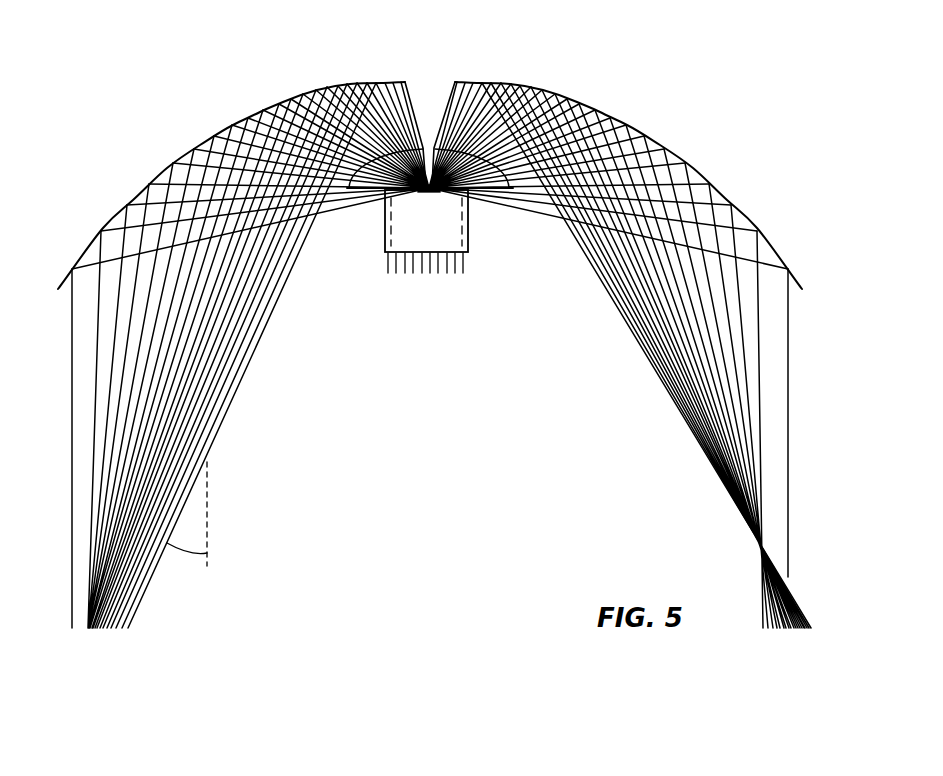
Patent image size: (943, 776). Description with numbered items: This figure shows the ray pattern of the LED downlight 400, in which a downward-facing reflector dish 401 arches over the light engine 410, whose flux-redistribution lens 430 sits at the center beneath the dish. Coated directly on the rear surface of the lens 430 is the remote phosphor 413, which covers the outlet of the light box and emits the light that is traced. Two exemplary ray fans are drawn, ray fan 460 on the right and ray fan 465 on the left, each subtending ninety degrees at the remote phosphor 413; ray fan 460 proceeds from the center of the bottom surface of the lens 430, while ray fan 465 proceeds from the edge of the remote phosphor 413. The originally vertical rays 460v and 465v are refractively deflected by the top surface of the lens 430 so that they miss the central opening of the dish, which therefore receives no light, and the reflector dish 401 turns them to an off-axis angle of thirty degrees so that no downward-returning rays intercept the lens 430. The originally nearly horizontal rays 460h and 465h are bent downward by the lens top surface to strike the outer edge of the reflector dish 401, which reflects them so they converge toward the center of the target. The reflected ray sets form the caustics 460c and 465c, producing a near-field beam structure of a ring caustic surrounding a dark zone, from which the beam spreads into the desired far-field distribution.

The LED downlight 400 is at (703, 88).
The reflector dish 401 is at (133, 198).
The light engine 410 is at (481, 293).
The remote phosphor 413 is at (424, 198).
The flux-redistribution lens 430 is at (365, 190).
The ray fan 460 is at (447, 97).
The ray fan 465 is at (411, 97).
The nearly horizontal ray 460h is at (792, 398).
The nearly horizontal ray 465h is at (72, 382).
The vertical ray 460v is at (672, 438).
The vertical ray 465v is at (220, 440).
The caustic 460c is at (729, 553).
The caustic 465c is at (149, 628).